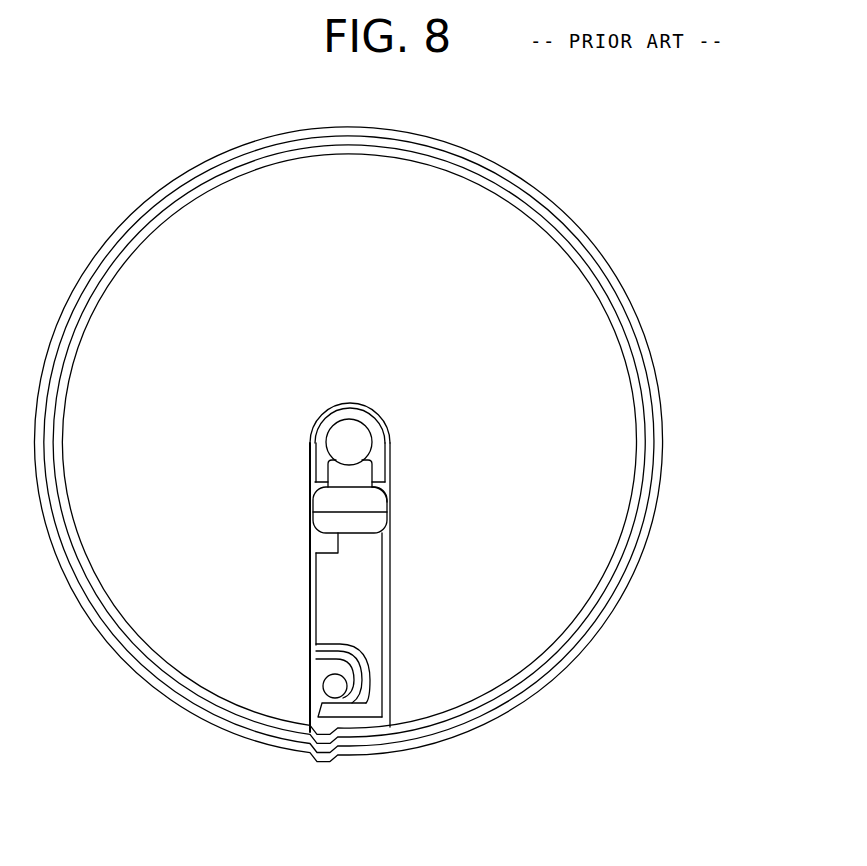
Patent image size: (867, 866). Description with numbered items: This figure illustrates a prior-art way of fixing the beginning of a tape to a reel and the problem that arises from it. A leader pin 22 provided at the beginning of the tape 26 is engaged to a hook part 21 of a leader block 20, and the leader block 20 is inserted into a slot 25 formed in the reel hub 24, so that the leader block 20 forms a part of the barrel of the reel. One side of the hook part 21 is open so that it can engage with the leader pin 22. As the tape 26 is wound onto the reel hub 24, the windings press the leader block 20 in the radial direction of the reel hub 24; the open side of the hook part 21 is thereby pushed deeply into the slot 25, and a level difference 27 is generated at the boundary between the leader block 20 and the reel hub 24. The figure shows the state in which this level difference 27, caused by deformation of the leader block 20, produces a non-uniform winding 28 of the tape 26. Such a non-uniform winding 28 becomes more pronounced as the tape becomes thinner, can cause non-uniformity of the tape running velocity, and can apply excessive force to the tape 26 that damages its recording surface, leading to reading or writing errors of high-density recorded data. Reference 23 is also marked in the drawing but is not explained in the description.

The leader block 20 is at (337, 600).
The hook part 21 is at (383, 706).
The leader pin 22 is at (340, 686).
The hook spring 23 is at (318, 712).
The reel hub 24 is at (602, 423).
The slot 25 is at (391, 567).
The tape 26 is at (557, 204).
The level difference 27 is at (303, 748).
The non-uniform winding 28 is at (332, 752).